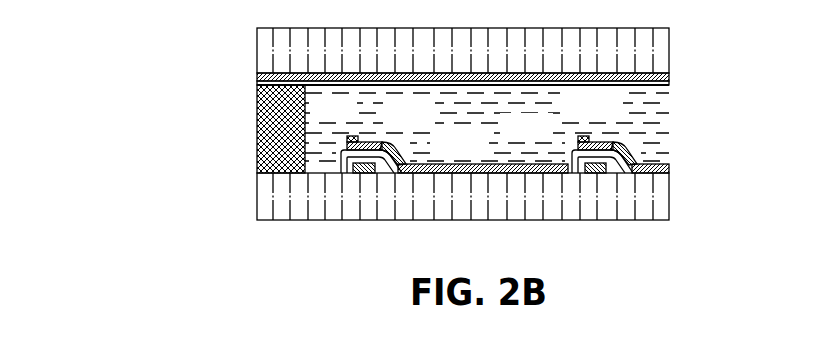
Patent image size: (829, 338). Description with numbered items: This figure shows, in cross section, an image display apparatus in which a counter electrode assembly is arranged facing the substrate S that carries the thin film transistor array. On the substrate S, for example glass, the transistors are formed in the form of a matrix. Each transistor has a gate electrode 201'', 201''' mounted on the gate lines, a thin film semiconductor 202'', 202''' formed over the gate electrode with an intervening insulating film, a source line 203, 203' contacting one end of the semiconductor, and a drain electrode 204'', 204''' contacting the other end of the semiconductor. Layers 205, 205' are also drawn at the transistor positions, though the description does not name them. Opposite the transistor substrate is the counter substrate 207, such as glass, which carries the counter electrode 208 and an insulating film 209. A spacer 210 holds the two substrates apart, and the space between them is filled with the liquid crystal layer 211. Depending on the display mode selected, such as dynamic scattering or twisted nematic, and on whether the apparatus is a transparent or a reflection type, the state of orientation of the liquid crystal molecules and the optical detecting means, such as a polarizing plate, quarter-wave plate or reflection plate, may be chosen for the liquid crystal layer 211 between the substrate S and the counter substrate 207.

The gate electrode 201'' is at (346, 208).
The gate electrode 201''' is at (618, 209).
The thin film semiconductor 202'' is at (389, 134).
The thin film semiconductor 202''' is at (600, 128).
The source line 203 is at (335, 120).
The source line 203' is at (546, 129).
The drain electrode 204'' is at (454, 152).
The drain electrode 204''' is at (662, 168).
The semiconductor layer 205 is at (393, 204).
The semiconductor layer 205' is at (571, 205).
The counter substrate 207 is at (662, 44).
The counter electrode 208 is at (665, 76).
The insulating film 209 is at (667, 83).
The spacer 210 is at (257, 133).
The liquid crystal layer 211 is at (667, 136).
The substrate S is at (665, 205).